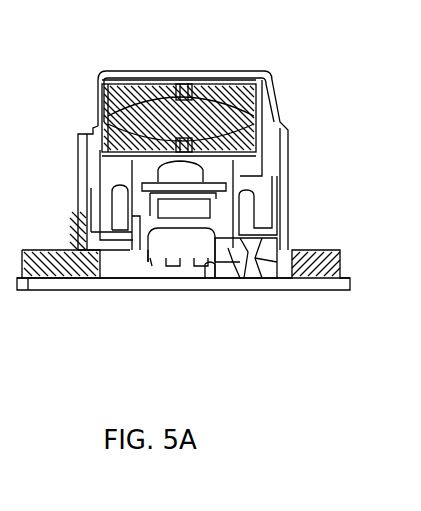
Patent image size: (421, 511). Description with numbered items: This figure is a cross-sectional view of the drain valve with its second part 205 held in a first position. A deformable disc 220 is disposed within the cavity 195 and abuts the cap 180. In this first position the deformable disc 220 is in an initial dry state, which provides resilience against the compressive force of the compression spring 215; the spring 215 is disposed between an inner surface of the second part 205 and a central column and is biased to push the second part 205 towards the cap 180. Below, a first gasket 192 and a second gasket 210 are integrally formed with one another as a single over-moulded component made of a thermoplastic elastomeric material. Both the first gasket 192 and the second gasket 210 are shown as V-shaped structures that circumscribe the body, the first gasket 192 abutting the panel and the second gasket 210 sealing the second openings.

The cap 180 is at (236, 70).
The first gasket 192 is at (35, 285).
The cavity 195 is at (258, 188).
The second part 205 is at (125, 245).
The second gasket 210 is at (258, 262).
The compression spring 215 is at (148, 168).
The deformable disc 220 is at (128, 100).